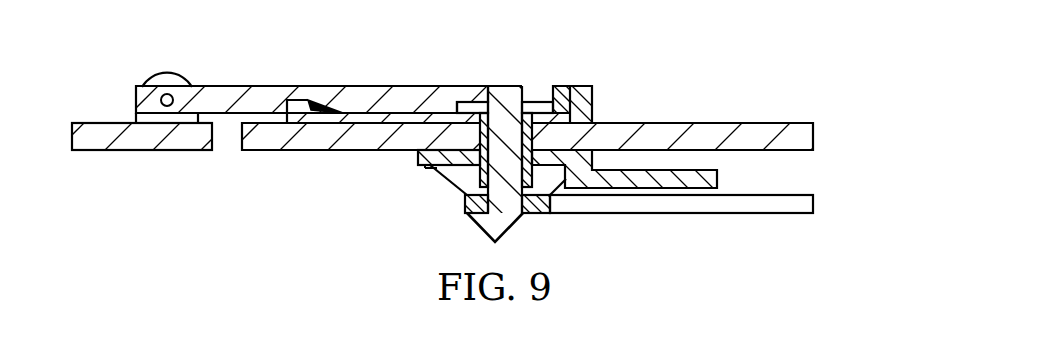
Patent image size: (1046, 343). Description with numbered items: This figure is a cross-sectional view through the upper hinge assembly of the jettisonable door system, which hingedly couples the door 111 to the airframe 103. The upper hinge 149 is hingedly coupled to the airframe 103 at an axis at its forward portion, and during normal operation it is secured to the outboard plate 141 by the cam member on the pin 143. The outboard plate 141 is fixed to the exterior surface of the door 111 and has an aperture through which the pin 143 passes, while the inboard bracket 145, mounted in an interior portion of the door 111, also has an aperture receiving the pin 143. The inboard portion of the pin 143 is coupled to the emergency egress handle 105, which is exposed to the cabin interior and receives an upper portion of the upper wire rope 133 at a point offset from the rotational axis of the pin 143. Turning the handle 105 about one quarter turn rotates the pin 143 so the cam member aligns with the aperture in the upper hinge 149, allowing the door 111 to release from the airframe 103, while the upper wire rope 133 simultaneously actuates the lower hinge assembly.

The airframe 103 is at (107, 122).
The upper hinge 149 is at (362, 87).
The door 111 is at (672, 123).
The pin 143 is at (500, 85).
The outboard plate 141 is at (532, 85).
The inboard bracket 145 is at (430, 167).
The upper wire rope 133 is at (510, 228).
The emergency egress handle 105 is at (677, 215).